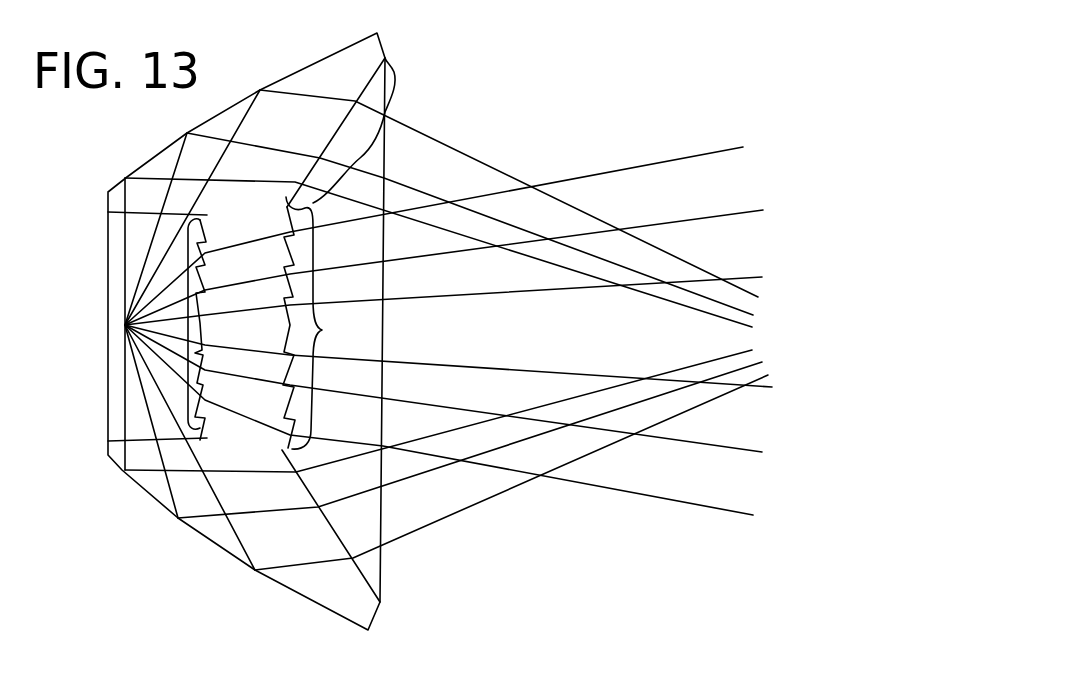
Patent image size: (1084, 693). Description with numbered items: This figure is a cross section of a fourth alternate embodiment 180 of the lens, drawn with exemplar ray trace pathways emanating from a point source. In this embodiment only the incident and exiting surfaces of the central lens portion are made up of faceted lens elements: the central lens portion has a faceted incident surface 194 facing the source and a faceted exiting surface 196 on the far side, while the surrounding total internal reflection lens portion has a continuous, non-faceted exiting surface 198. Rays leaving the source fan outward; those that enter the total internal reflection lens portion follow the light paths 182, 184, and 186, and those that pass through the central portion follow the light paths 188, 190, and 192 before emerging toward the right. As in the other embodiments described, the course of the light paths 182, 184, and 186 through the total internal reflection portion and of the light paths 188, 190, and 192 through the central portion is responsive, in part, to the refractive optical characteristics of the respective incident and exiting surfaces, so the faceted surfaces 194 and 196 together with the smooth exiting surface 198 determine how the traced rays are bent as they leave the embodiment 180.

The fourth alternate embodiment 180 is at (418, 80).
The light path 182 is at (152, 177).
The light path 184 is at (287, 152).
The light path 186 is at (301, 94).
The light path 188 is at (428, 363).
The light path 190 is at (433, 402).
The light path 192 is at (362, 444).
The faceted incident surface 194 is at (127, 386).
The faceted exiting surface 196 is at (328, 323).
The continuous non-faceted exiting surface 198 is at (392, 146).